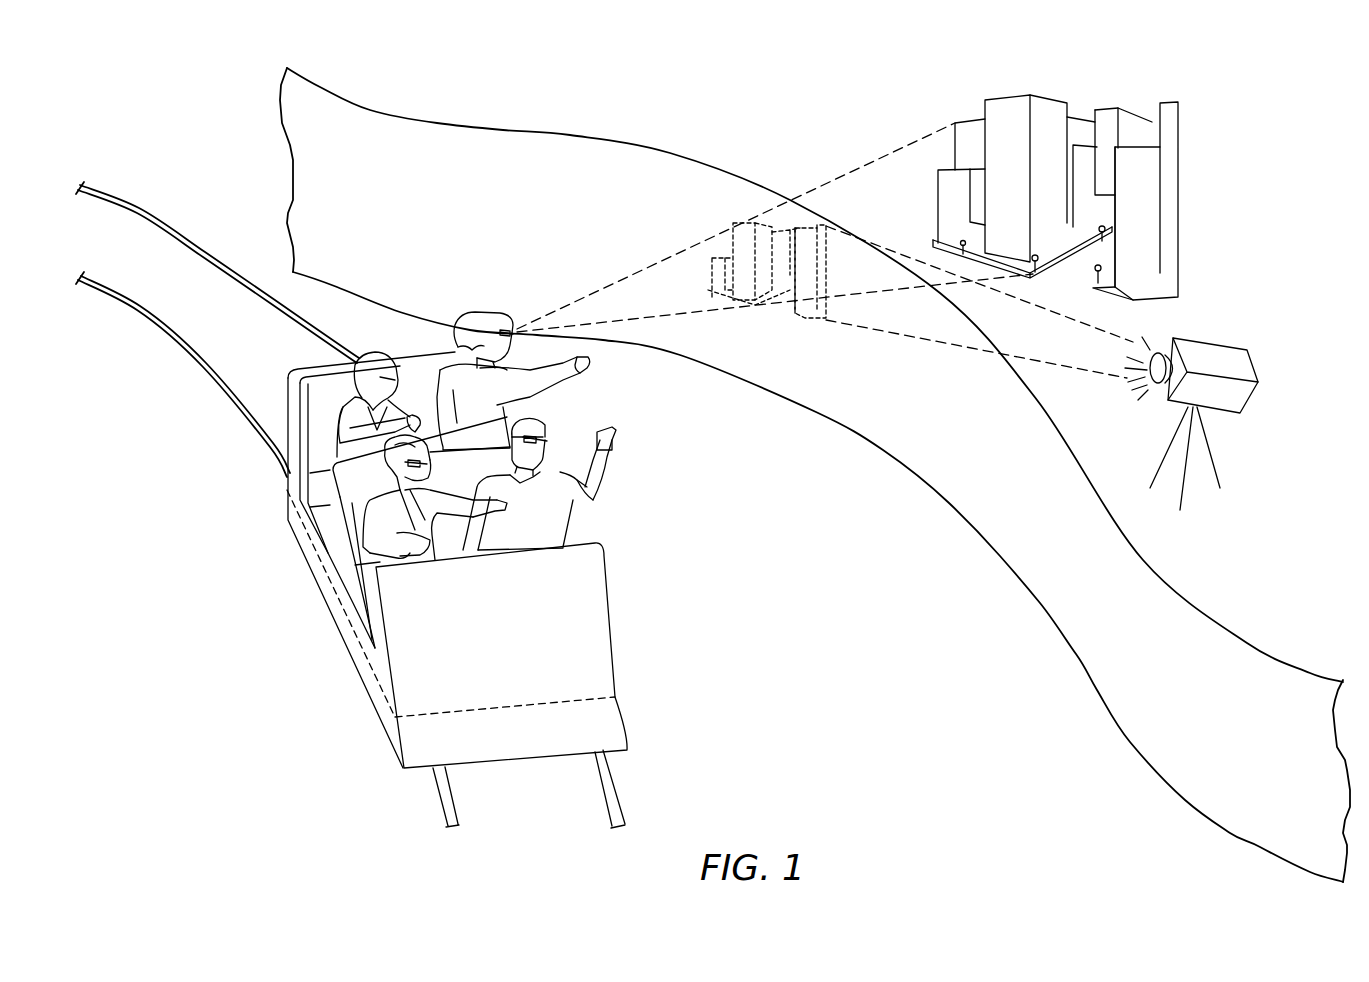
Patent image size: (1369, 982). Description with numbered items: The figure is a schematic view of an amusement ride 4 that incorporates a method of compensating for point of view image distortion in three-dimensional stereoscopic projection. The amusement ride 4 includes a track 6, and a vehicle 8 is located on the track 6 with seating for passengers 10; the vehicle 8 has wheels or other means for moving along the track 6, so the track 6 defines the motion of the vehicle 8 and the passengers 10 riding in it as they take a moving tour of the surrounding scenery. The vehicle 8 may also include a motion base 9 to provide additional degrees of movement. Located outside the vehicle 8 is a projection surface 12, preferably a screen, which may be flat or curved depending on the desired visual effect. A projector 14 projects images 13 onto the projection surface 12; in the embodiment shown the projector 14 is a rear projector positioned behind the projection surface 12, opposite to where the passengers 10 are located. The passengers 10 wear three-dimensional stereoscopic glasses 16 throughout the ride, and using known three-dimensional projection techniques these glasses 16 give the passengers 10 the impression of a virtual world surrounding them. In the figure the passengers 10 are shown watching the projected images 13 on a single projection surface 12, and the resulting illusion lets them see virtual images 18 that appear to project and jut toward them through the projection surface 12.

The amusement ride 4 is at (688, 640).
The track 6 is at (443, 798).
The vehicle 8 is at (583, 622).
The motion base 9 is at (370, 667).
The passengers 10 is at (375, 350).
The projection surface 12 is at (560, 153).
The projected images 13 is at (803, 305).
The projector 14 is at (1230, 395).
The 3D stereoscopic glasses 16 is at (518, 327).
The virtual images 18 is at (1005, 113).